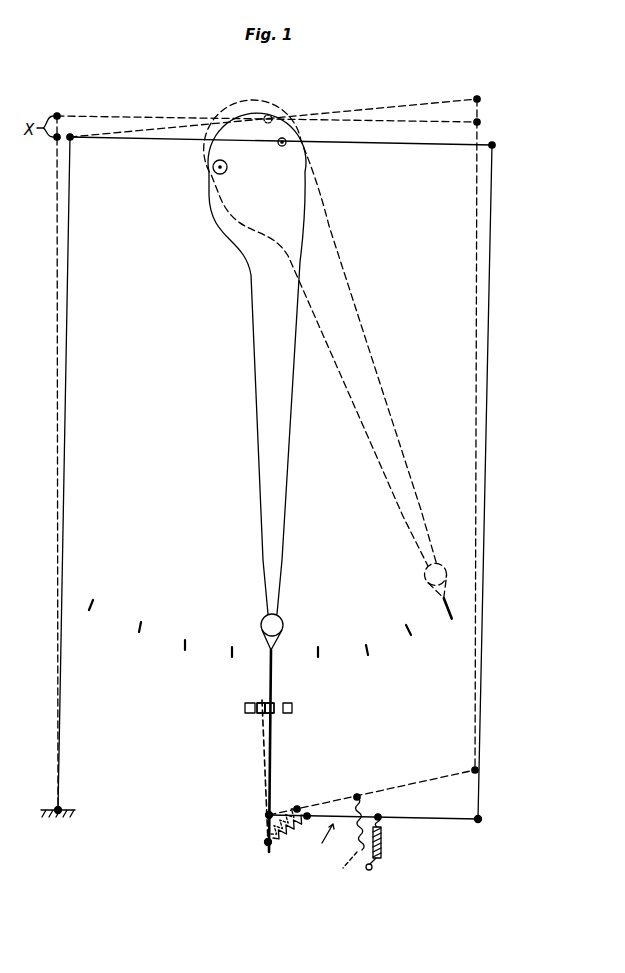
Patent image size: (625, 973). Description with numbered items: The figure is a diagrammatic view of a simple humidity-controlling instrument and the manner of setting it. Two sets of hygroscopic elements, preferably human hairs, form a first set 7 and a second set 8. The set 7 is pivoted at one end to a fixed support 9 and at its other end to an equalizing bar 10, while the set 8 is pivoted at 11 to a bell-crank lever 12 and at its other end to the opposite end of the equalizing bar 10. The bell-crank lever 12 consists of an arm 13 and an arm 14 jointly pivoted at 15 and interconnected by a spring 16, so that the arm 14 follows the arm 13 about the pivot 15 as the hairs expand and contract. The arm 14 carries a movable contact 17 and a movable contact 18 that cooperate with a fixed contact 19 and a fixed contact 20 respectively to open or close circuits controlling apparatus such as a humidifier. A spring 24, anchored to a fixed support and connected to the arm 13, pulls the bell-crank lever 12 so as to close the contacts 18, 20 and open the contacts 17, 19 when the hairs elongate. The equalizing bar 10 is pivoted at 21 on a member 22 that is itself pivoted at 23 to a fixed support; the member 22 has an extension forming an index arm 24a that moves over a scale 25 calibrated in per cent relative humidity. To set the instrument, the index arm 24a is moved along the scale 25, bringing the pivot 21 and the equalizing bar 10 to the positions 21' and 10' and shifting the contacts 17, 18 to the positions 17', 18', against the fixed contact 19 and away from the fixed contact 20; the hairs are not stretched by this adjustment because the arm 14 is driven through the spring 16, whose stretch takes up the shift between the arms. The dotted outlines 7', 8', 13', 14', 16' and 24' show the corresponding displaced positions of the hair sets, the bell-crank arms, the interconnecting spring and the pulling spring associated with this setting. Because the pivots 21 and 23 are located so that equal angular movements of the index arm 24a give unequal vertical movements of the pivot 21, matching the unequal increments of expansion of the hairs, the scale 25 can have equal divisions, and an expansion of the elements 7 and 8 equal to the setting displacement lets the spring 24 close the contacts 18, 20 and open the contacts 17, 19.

The set of hygroscopic elements 7 is at (74, 472).
The left frame bar in displaced position 7' is at (74, 461).
The set of hygroscopic elements 8 is at (496, 482).
The right frame bar in displaced position 8' is at (492, 436).
The fixed support 9 is at (62, 808).
The equalizing bar 10 is at (282, 153).
The equalizing bar position 10' is at (275, 110).
The pivot 11 is at (483, 820).
The bell-crank lever 12 is at (324, 842).
The arm 13 is at (373, 829).
The bottom link in displaced position 13' is at (372, 780).
The arm 14 is at (285, 751).
The rod in displaced position 14' is at (249, 771).
The pivot 15 is at (264, 816).
The spring 16 is at (290, 839).
The spring in displaced position 16' is at (288, 809).
The contact 17 is at (292, 692).
The contact position 17' is at (238, 695).
The contact 18 is at (292, 700).
The contact position 18' is at (260, 694).
The fixed contact 19 is at (248, 714).
The fixed contact 20 is at (289, 715).
The pivot 21 is at (286, 155).
The pivot position 21' is at (289, 102).
The member 22 is at (300, 221).
The fixed pivot 23 is at (226, 172).
The spring 24 is at (388, 844).
The damping spring in displaced position 24' is at (347, 840).
The index arm 24a is at (336, 367).
The scale 25 is at (364, 646).